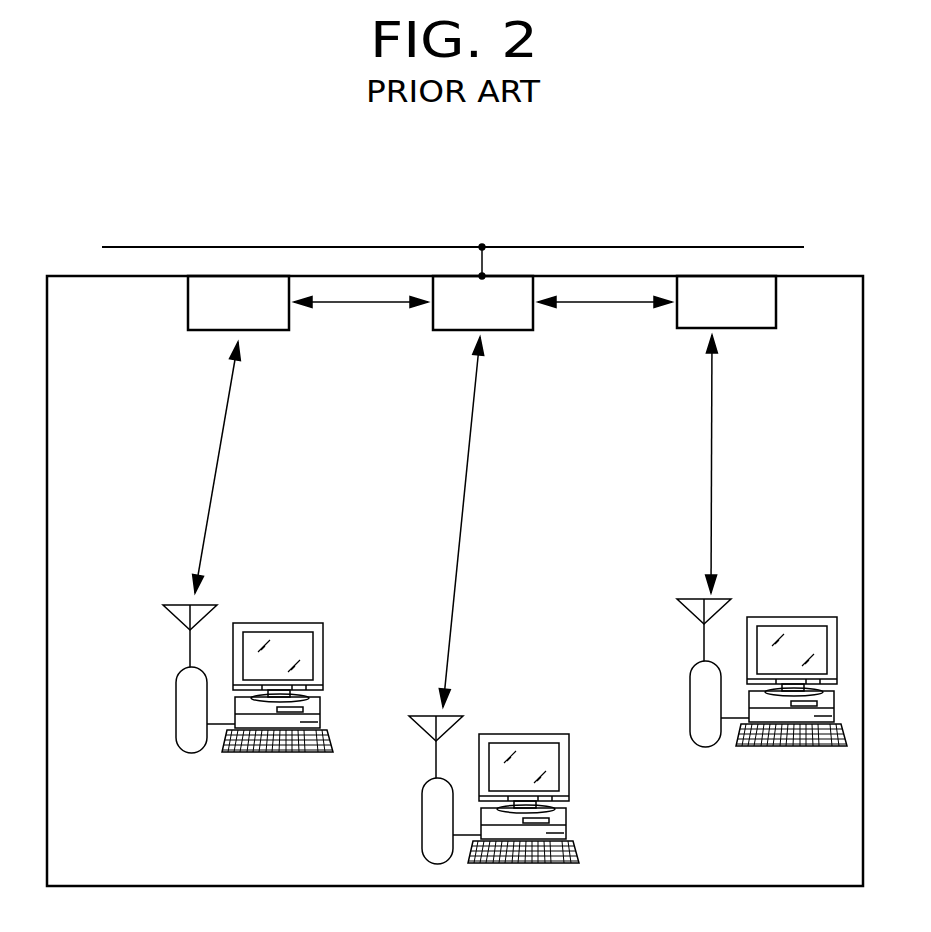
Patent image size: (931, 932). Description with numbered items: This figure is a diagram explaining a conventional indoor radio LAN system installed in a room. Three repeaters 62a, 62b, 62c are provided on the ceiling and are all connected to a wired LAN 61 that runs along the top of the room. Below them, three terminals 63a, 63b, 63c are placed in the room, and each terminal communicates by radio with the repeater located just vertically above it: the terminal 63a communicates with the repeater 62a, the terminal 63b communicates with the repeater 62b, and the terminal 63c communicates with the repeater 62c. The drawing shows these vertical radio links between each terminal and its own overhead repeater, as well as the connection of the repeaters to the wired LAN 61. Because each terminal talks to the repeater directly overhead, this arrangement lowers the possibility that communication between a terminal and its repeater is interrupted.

The wired LAN 61 is at (600, 247).
The repeater 62a is at (213, 331).
The repeater 62b is at (462, 330).
The repeater 62c is at (695, 328).
The terminal 63a is at (176, 703).
The terminal 63b is at (422, 818).
The terminal 63c is at (688, 703).